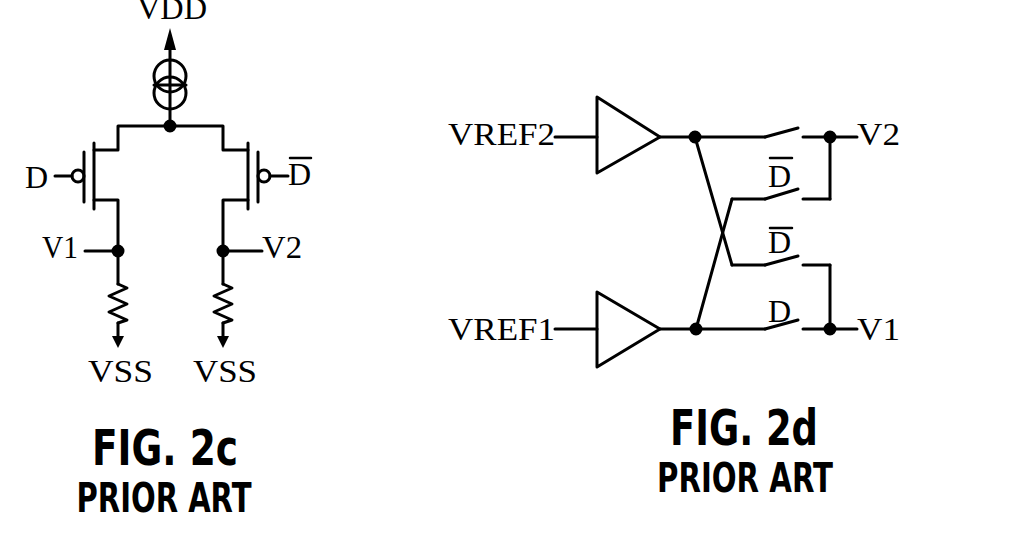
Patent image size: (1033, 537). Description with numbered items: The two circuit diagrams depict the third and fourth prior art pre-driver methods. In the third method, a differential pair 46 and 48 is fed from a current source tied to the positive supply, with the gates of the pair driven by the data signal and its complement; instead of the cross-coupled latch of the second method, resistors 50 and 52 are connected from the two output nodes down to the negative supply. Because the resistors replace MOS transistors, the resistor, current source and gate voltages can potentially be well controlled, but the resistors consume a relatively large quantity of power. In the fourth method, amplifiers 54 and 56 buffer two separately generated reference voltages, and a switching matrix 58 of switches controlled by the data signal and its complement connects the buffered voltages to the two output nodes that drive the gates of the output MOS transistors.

In FIG. 2C, the differential pair transistor 46 is at (72, 146).
In FIG. 2C, the differential pair transistor 48 is at (269, 146).
In FIG. 2C, the resistor 50 is at (112, 297).
In FIG. 2C, the resistor 52 is at (232, 297).
In FIG. 2D, the amplifier 54 is at (613, 297).
In FIG. 2D, the amplifier 56 is at (613, 167).
In FIG. 2D, the switching matrix 58 is at (814, 116).